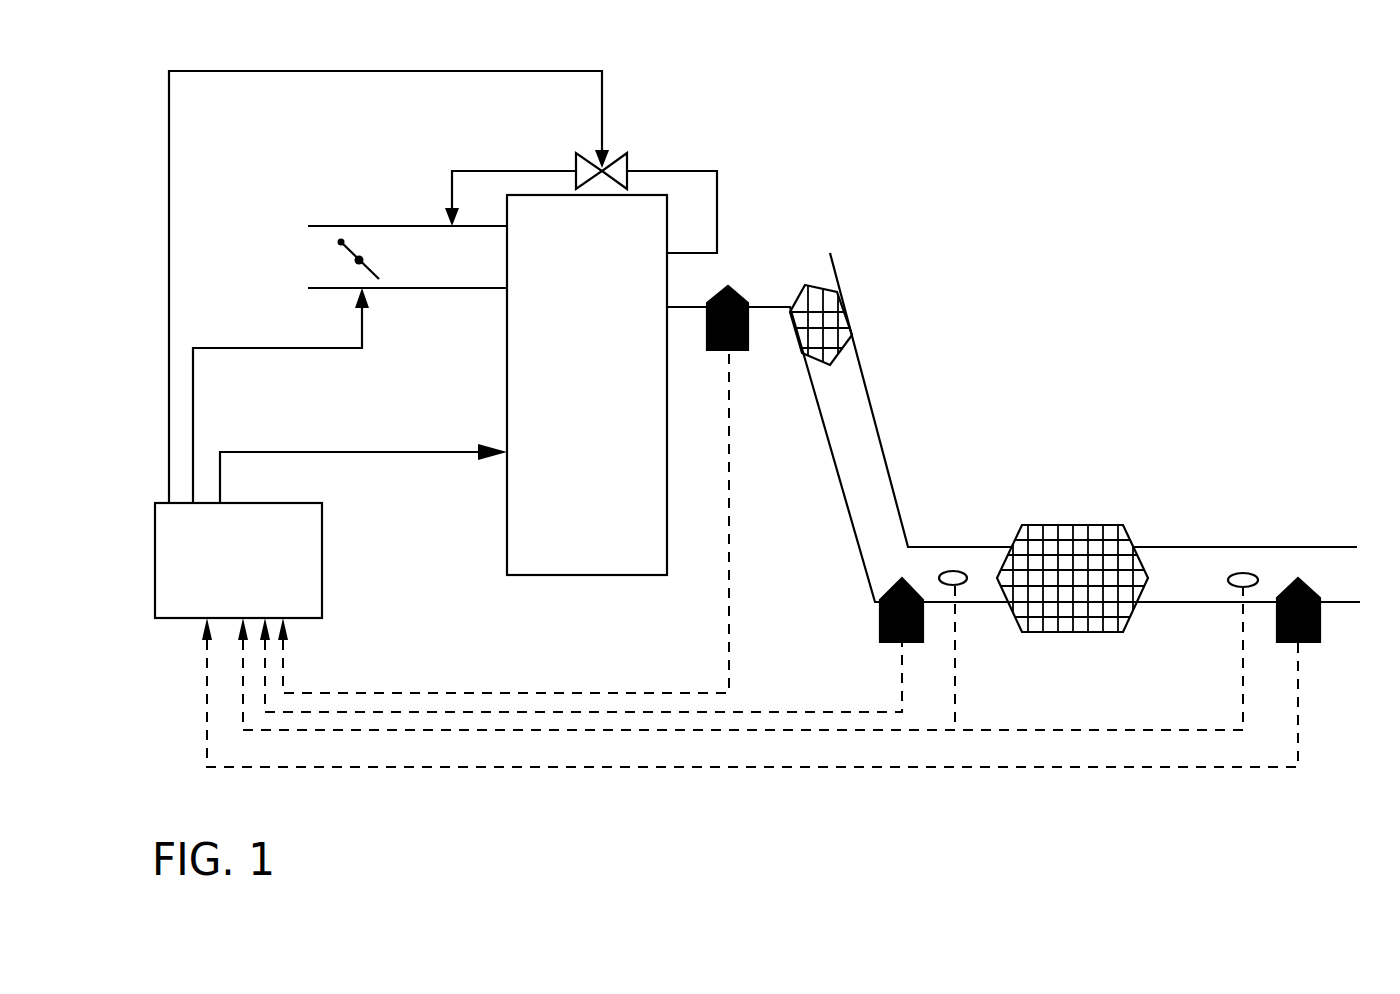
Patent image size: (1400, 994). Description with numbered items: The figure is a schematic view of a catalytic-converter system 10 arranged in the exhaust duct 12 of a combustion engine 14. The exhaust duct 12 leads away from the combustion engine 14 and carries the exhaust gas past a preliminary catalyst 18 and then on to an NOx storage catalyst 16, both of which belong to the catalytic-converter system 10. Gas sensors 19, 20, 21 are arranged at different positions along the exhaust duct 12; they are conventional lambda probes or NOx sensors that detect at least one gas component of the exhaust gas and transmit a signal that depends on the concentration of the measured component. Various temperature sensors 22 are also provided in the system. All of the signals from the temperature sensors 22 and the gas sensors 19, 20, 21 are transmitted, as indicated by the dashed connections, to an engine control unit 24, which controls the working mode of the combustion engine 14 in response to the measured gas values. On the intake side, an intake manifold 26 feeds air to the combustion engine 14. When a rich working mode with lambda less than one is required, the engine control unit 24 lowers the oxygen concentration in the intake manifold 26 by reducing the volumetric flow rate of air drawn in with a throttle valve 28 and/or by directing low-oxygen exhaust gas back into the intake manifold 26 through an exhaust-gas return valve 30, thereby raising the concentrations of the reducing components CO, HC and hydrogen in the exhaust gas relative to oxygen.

The catalytic-converter system 10 is at (1027, 223).
The exhaust duct 12 is at (857, 467).
The combustion engine 14 is at (640, 242).
The NOx storage catalyst 16 is at (1085, 590).
The preliminary catalyst 18 is at (832, 317).
The gas sensor 19 is at (752, 302).
The gas sensor 20 is at (908, 582).
The gas sensor 21 is at (1310, 583).
The temperature sensors 22 is at (1229, 580).
The engine control unit 24 is at (193, 588).
The intake manifold 26 is at (408, 255).
The throttle valve 28 is at (341, 242).
The exhaust-gas return valve 30 is at (615, 157).